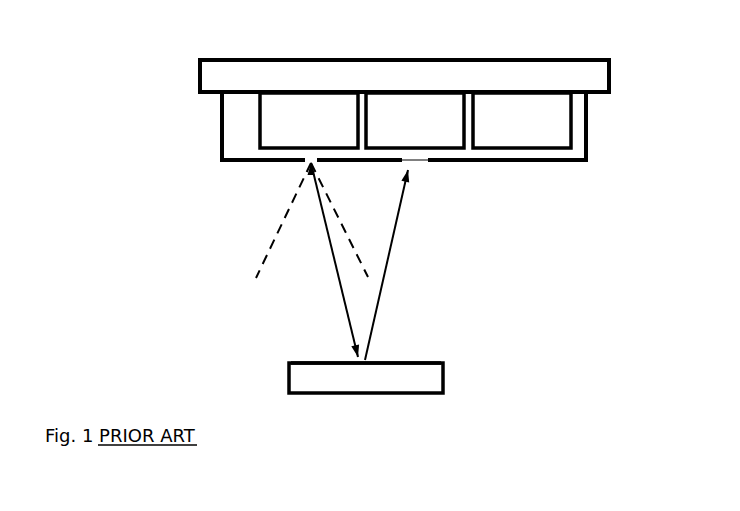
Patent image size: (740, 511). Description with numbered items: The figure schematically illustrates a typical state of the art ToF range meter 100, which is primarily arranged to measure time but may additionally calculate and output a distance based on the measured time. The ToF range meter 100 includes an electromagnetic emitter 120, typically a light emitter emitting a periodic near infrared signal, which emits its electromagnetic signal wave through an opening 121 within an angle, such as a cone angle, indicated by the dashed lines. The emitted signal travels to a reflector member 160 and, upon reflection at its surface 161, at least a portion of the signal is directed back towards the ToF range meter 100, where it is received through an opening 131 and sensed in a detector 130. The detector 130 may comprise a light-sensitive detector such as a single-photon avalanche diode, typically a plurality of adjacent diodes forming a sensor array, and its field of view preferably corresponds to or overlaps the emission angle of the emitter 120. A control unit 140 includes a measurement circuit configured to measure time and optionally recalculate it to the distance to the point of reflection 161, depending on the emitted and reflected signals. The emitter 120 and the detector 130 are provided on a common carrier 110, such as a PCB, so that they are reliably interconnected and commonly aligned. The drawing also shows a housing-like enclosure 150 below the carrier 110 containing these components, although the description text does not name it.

The ToF range meter 100 is at (365, 198).
The common carrier 110 is at (207, 73).
The electromagnetic emitter 120 is at (314, 130).
The detector 130 is at (420, 130).
The control unit 140 is at (527, 130).
The opening 121 is at (308, 163).
The opening 131 is at (422, 172).
The housing 150 is at (512, 163).
The reflector member 160 is at (430, 382).
The surface 161 is at (308, 356).